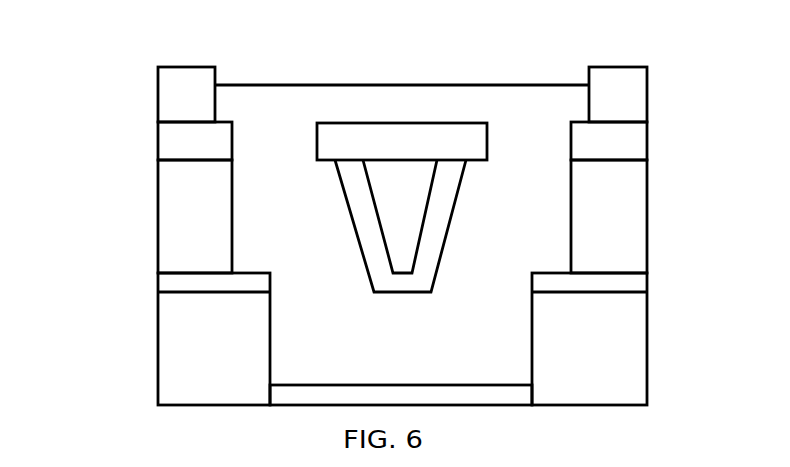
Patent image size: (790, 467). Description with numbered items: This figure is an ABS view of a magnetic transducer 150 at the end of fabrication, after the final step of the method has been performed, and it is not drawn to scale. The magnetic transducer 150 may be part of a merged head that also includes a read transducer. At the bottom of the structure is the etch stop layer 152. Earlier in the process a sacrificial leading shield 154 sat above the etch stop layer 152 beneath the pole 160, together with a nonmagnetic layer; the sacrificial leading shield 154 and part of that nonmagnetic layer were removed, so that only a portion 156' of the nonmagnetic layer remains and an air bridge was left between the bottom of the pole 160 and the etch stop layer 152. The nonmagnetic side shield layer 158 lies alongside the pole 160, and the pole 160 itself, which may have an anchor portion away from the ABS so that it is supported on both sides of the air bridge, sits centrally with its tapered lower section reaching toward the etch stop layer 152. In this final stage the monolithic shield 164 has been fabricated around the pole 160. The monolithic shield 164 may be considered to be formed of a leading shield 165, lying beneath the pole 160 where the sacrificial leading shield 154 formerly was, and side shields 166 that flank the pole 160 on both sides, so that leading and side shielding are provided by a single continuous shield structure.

The magnetic transducer 150 is at (70, 41).
The etch stop layer 152 is at (537, 393).
The sacrificial leading shield 154 is at (270, 343).
The portion of the nonmagnetic layer 156' is at (402, 123).
The nonmagnetic side shield layer 158 is at (363, 266).
The pole 160 is at (415, 160).
The monolithic shield 164 is at (524, 85).
The leading shield 165 is at (293, 367).
The side shields 166 is at (298, 207).